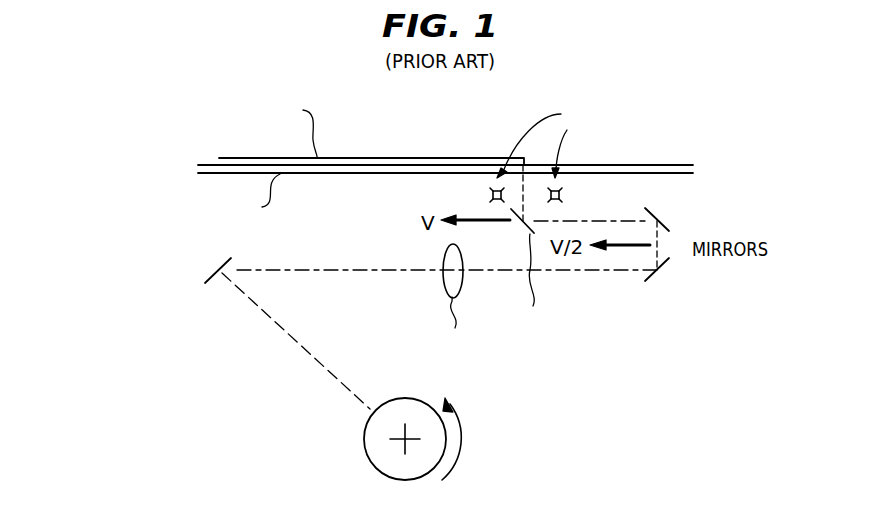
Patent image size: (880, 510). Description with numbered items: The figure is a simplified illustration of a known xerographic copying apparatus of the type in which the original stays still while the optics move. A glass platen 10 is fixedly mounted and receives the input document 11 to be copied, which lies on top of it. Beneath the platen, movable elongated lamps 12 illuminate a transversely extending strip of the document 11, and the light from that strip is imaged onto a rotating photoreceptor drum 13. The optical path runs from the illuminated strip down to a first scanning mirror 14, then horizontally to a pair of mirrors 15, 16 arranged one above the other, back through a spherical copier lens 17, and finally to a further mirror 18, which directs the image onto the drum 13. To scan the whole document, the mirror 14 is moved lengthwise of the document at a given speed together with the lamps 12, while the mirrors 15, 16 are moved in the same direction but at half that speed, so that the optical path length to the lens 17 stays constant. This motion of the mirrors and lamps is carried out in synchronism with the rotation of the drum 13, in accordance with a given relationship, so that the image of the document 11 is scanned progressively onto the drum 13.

The platen 10 is at (358, 174).
The document 11 is at (425, 158).
The elongated lamps 12 is at (490, 195).
The photoreceptor drum 13 is at (376, 461).
The mirror 14 is at (523, 229).
The mirror 15 is at (666, 223).
The mirror 16 is at (652, 280).
The lens 17 is at (448, 290).
The mirror 18 is at (216, 273).